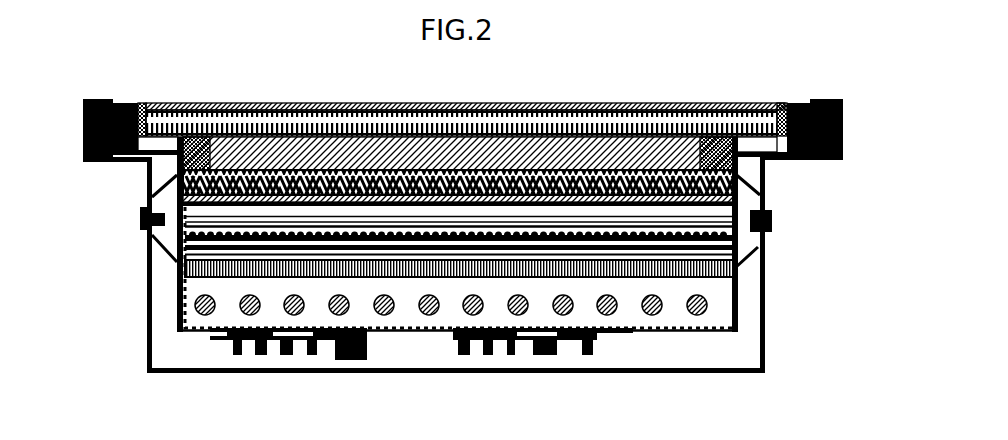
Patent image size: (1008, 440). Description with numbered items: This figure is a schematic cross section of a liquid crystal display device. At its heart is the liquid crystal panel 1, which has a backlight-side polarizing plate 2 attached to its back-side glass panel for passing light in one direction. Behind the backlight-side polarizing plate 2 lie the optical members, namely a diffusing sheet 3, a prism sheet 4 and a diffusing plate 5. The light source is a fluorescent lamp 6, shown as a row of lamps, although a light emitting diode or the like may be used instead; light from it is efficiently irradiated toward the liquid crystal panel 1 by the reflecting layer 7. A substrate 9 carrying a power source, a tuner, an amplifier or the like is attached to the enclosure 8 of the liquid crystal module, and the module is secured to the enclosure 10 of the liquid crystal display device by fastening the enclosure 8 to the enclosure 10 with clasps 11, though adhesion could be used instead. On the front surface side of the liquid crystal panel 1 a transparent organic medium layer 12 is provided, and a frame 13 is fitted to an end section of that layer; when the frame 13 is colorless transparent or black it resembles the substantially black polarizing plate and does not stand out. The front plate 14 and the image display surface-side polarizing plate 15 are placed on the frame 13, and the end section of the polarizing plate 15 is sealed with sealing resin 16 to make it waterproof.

The liquid crystal panel 1 is at (170, 182).
The backlight-side polarizing plate 2 is at (155, 195).
The diffusing sheet 3 is at (740, 221).
The prism sheet 4 is at (750, 238).
The diffusing plate 5 is at (737, 270).
The fluorescent lamp 6 is at (700, 310).
The reflecting layer 7 is at (178, 313).
The enclosure of the liquid crystal module 8 is at (657, 333).
The substrate 9 is at (460, 347).
The enclosure of the liquid crystal display device 10 is at (147, 340).
The clasps 11 is at (143, 217).
The transparent organic medium layer 12 is at (257, 138).
The frame 13 is at (187, 135).
The front plate 14 is at (380, 112).
The image display surface-side polarizing plate 15 is at (518, 103).
The sealing resin 16 is at (783, 102).